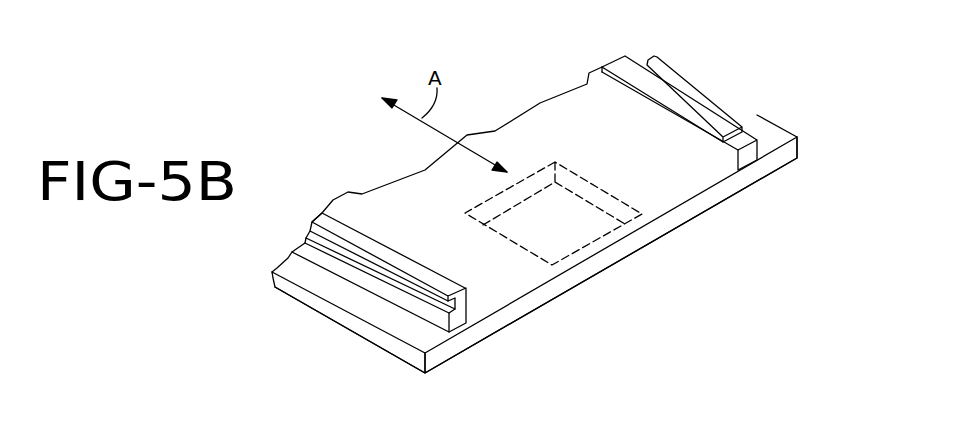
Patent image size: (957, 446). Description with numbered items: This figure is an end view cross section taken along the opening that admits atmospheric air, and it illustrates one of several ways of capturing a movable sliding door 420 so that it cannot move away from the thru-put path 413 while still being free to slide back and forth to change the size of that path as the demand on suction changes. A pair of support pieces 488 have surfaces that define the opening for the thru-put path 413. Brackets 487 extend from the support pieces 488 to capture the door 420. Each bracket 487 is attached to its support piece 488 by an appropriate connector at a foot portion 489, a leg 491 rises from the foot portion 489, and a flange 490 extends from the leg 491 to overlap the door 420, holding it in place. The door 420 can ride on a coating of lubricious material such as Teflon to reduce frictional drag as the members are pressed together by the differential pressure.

The thru-put path 413 is at (602, 263).
The movable door 420 is at (555, 127).
The bracket 487 is at (318, 214).
The support piece 488 is at (456, 348).
The foot portion 489 is at (375, 295).
The flange 490 is at (352, 230).
The leg 491 is at (342, 245).